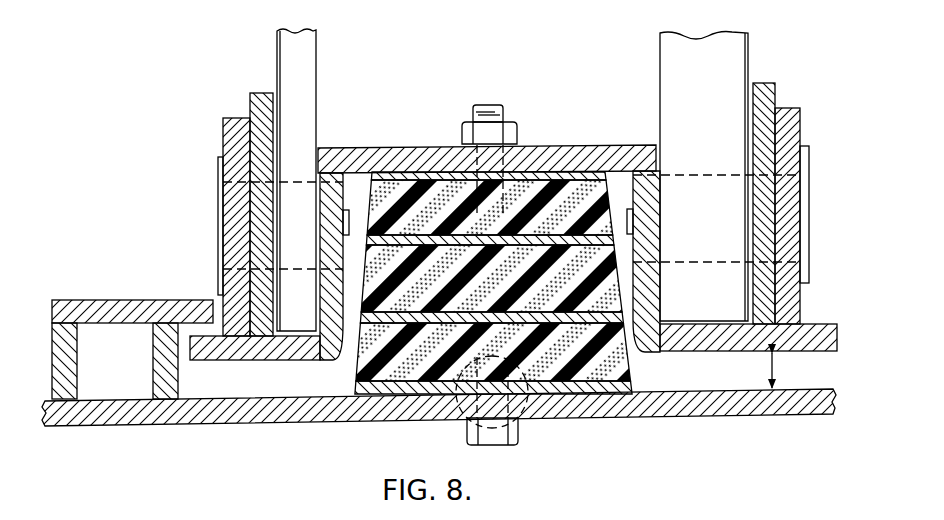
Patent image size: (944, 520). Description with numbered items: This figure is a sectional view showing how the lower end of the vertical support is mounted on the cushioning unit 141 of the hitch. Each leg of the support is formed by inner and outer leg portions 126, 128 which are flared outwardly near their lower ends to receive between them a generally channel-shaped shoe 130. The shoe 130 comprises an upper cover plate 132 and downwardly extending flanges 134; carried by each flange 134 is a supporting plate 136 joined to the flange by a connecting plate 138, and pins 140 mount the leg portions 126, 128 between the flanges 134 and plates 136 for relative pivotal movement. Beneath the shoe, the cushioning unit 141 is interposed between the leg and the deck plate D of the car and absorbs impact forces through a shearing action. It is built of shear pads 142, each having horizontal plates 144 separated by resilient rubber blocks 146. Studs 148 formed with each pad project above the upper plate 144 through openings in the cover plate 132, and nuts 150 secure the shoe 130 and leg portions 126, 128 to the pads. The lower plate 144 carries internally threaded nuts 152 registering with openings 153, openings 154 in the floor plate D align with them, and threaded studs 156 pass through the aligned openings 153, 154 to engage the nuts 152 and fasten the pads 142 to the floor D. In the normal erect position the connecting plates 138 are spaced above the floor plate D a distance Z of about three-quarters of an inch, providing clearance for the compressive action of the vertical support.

The inner leg portion 126 is at (317, 66).
The outer leg portion 128 is at (664, 63).
The shoe 130 is at (465, 259).
The upper cover plate 132 is at (363, 148).
The flange 134 is at (323, 222).
The supporting plate 136 is at (232, 117).
The connecting plate 138 is at (222, 361).
The pin 140 is at (219, 208).
The cushioning unit 141 is at (453, 284).
The shear pad 142 is at (407, 392).
The horizontal plate 144 is at (406, 186).
The resilient block 146 is at (571, 218).
The stud 148 is at (475, 104).
The nut 150 is at (512, 119).
The internally threaded nut 152 is at (486, 363).
The opening 153 is at (455, 420).
The opening 154 is at (527, 418).
The threaded stud 156 is at (138, 299).
The deck plate D is at (238, 424).
The clearance distance Z is at (778, 368).